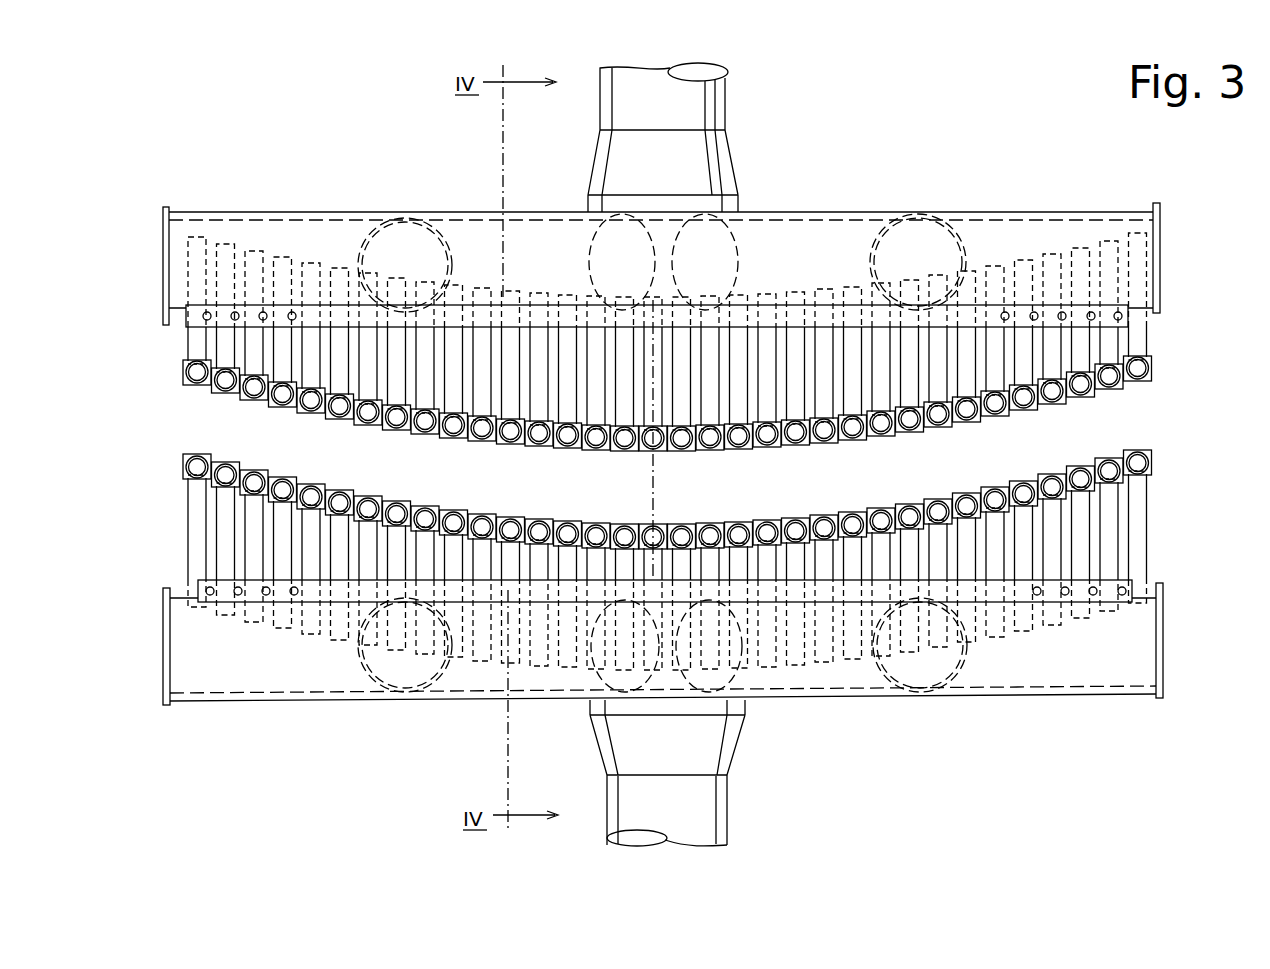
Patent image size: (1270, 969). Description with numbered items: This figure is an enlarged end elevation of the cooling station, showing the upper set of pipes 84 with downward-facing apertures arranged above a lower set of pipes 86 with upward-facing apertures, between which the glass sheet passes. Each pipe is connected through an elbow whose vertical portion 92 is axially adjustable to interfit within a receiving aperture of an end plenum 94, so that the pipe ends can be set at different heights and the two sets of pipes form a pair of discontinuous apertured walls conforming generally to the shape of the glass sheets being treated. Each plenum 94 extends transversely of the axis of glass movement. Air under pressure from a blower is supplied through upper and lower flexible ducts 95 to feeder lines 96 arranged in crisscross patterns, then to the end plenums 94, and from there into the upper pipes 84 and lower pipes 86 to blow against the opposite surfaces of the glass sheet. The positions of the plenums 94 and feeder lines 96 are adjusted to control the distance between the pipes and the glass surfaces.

The upper set of pipes 84 is at (1050, 404).
The lower set of pipes 86 is at (256, 471).
The vertical portion 92 is at (250, 295).
The end plenum 94 is at (283, 212).
The flexible duct 95 is at (668, 112).
The feeder line 96 is at (742, 258).